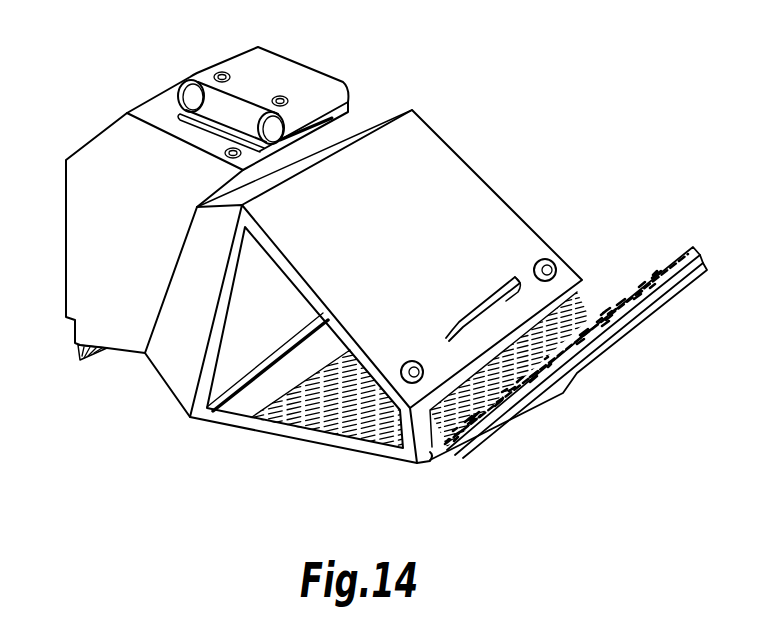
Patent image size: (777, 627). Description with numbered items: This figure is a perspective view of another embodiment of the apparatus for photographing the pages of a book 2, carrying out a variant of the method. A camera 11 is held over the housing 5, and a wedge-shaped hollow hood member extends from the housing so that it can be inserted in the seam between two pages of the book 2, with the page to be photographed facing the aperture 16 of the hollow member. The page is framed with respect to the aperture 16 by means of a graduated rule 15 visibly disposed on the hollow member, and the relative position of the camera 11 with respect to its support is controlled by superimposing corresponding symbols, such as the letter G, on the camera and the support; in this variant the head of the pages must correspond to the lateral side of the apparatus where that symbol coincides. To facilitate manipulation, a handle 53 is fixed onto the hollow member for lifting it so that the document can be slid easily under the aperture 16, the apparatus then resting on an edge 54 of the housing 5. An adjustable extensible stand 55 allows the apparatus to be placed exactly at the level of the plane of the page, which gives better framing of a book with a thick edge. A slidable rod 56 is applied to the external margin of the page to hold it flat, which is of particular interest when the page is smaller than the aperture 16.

The housing 5 is at (87, 236).
The camera 11 is at (287, 78).
The handle 53 is at (483, 300).
The aperture 16 is at (232, 410).
The slidable rod 56 is at (253, 421).
The graduated rule 15 is at (509, 373).
The book 2 is at (582, 370).
The edge 54 is at (78, 348).
The adjustable extensible stand 55 is at (86, 352).